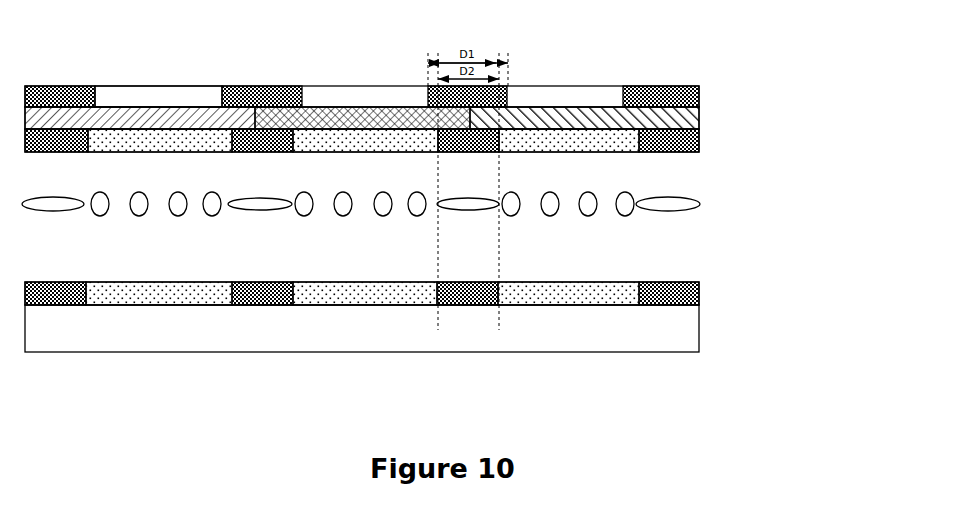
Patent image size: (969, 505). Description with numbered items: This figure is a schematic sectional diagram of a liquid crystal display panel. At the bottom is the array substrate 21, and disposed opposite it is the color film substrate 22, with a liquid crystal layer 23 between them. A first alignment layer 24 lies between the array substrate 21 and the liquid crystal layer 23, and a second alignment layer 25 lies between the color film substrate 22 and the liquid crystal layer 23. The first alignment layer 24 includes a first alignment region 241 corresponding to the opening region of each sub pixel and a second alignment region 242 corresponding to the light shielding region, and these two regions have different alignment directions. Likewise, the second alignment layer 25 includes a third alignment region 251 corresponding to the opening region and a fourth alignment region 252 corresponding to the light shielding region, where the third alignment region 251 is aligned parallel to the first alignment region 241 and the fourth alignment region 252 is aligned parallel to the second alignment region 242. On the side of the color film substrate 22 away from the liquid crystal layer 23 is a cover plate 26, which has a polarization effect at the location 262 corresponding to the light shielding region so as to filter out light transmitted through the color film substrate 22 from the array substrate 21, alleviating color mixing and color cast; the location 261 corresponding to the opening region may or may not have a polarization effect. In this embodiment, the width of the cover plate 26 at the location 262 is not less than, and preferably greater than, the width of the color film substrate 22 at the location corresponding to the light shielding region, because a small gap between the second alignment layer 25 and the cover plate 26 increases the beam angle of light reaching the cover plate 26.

The array substrate 21 is at (700, 333).
The first alignment layer 24 is at (426, 352).
The first alignment region 241 is at (165, 298).
The second alignment region 242 is at (48, 303).
The liquid crystal layer 23 is at (700, 204).
The second alignment layer 25 is at (422, 84).
The third alignment region 251 is at (188, 137).
The fourth alignment region 252 is at (70, 147).
The color film substrate 22 is at (700, 120).
The cover plate 26 is at (424, 66).
The location corresponding to the opening region in the cover plate 261 is at (155, 93).
The location corresponding to the light shielding region in the cover plate 262 is at (57, 88).